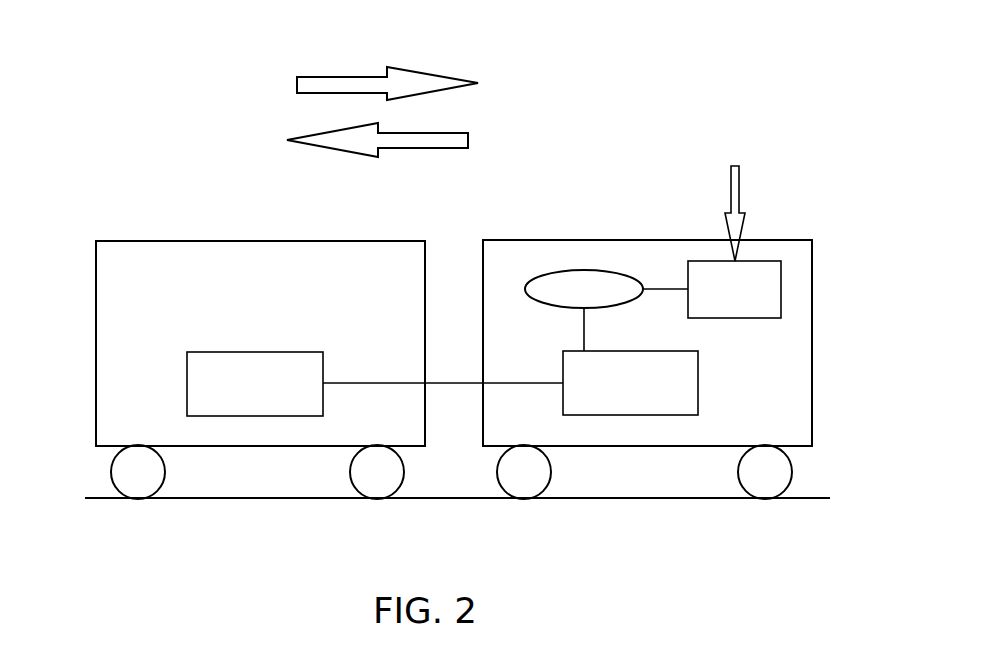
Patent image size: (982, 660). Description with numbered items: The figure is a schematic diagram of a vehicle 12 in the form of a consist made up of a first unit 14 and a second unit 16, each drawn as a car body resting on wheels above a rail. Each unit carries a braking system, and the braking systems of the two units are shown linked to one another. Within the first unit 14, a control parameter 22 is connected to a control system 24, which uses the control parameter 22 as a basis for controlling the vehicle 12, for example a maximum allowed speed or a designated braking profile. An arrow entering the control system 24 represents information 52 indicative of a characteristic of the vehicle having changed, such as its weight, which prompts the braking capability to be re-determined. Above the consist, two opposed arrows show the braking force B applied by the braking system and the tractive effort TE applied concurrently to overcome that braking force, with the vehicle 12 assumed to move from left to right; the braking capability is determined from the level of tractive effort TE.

The vehicle 12 is at (160, 194).
The first unit 14 is at (812, 345).
The second unit 16 is at (96, 342).
The control parameter 22 is at (584, 270).
The control system 24 is at (748, 304).
The information 52 is at (740, 181).
The tractive effort TE is at (331, 77).
The braking force B is at (468, 140).